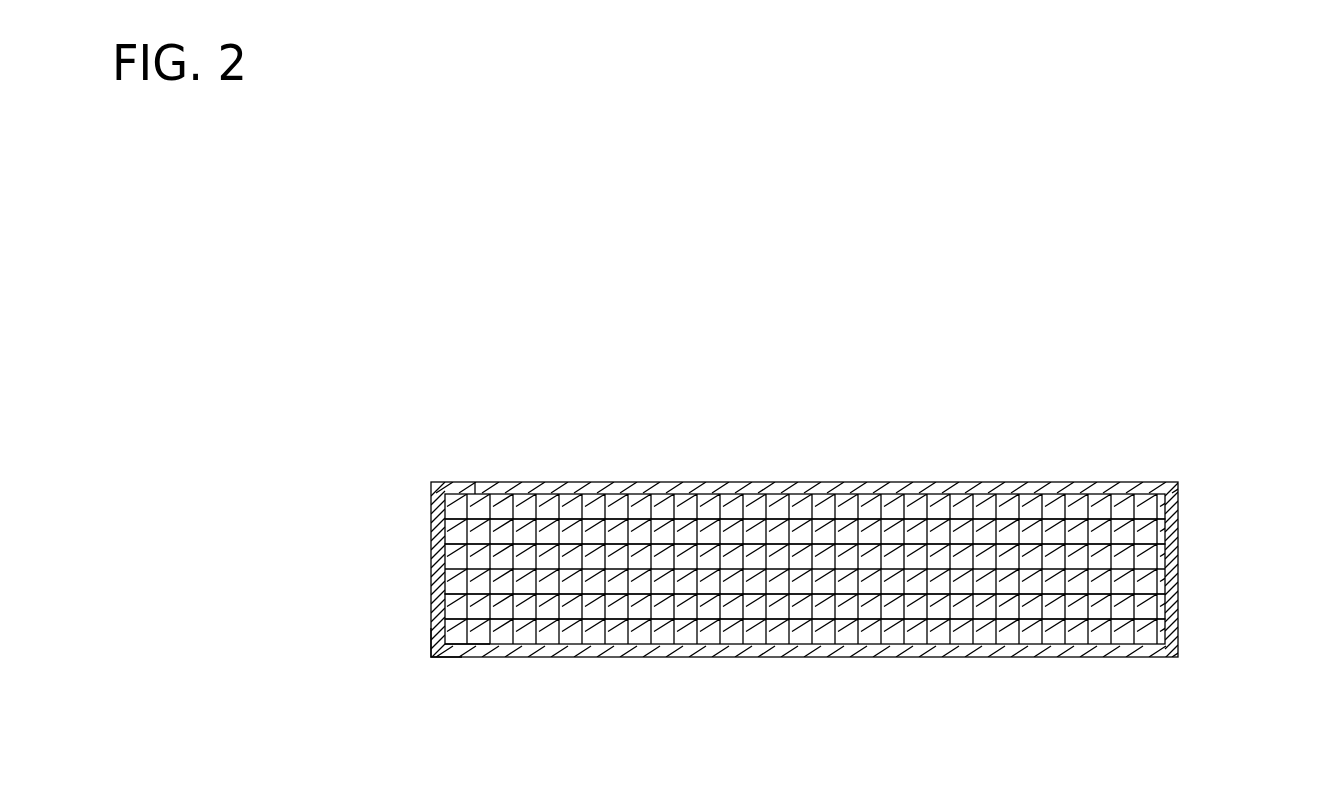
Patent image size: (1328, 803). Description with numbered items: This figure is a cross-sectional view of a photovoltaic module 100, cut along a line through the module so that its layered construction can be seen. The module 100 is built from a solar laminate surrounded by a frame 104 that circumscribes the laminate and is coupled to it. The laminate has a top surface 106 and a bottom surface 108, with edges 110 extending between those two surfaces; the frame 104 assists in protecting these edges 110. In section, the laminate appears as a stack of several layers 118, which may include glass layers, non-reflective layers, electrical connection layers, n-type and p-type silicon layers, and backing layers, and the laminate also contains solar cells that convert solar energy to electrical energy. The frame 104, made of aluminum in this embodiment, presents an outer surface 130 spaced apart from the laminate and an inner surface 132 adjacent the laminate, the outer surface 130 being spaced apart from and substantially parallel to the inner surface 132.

The PV module 100 is at (496, 421).
The frame 104 is at (445, 482).
The top surface 106 is at (855, 493).
The bottom surface 108 is at (823, 640).
The edges 110 is at (1172, 548).
The layers 118 is at (1170, 522).
The outer surface 130 is at (431, 642).
The inner surface 132 is at (462, 640).